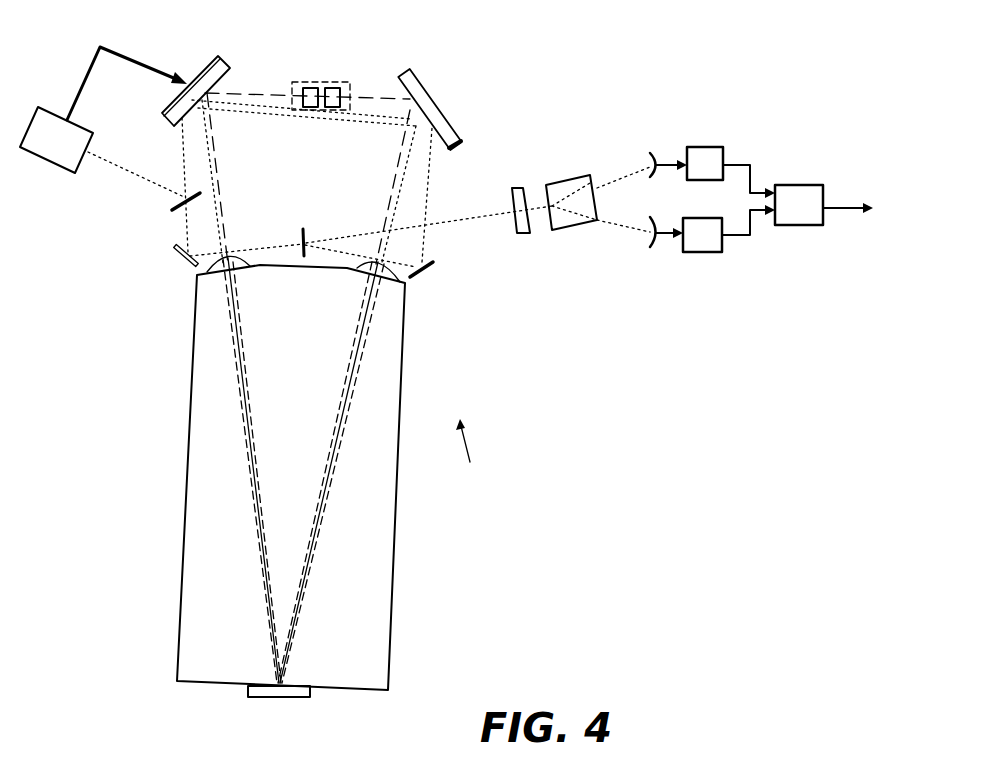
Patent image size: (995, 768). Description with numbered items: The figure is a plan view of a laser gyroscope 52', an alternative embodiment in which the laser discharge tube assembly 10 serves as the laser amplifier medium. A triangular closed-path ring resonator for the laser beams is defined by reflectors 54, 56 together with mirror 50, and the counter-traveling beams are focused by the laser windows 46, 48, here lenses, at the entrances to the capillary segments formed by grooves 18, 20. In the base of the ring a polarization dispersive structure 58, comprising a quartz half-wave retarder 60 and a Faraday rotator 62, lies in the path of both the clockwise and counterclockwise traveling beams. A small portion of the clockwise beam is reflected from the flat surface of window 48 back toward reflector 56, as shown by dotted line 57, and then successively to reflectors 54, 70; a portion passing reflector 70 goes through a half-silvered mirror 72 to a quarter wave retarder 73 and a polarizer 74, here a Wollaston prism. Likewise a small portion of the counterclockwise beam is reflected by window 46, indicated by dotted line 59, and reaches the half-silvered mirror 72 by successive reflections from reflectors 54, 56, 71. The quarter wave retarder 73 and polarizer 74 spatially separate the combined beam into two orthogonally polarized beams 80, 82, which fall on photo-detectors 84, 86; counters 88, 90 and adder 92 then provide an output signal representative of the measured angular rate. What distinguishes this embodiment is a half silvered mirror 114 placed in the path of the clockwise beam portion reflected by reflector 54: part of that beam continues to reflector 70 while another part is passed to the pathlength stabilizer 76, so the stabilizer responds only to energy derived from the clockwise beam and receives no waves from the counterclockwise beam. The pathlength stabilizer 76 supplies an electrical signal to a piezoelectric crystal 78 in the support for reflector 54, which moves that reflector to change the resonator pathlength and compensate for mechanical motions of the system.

The laser discharge tube assembly 10 is at (398, 430).
The groove 18 is at (250, 410).
The groove 20 is at (325, 470).
The laser window 46 is at (240, 258).
The laser window 48 is at (359, 272).
The mirror 50 is at (298, 697).
The laser gyroscope 52' is at (471, 458).
The reflector 54 is at (226, 64).
The reflector 56 is at (420, 90).
The dotted line 57 is at (181, 145).
The dotted line 59 is at (216, 158).
The polarization dispersive structure 58 is at (294, 82).
The half-wave retarder 60 is at (316, 88).
The Faraday rotator 62 is at (340, 88).
The reflector 70 is at (178, 261).
The reflector 71 is at (432, 264).
The half-silvered mirror 72 is at (306, 232).
The quarter wave retarder 73 is at (521, 188).
The polarizer 74 is at (572, 178).
The pathlength stabilizer 76 is at (56, 153).
The piezoelectric crystal 78 is at (214, 62).
The beam 80 is at (625, 172).
The beam 82 is at (626, 226).
The photo-detector 84 is at (655, 153).
The photo-detector 86 is at (654, 246).
The counter 88 is at (712, 147).
The counter 90 is at (718, 252).
The adder 92 is at (795, 185).
The half silvered mirror 114 is at (170, 212).